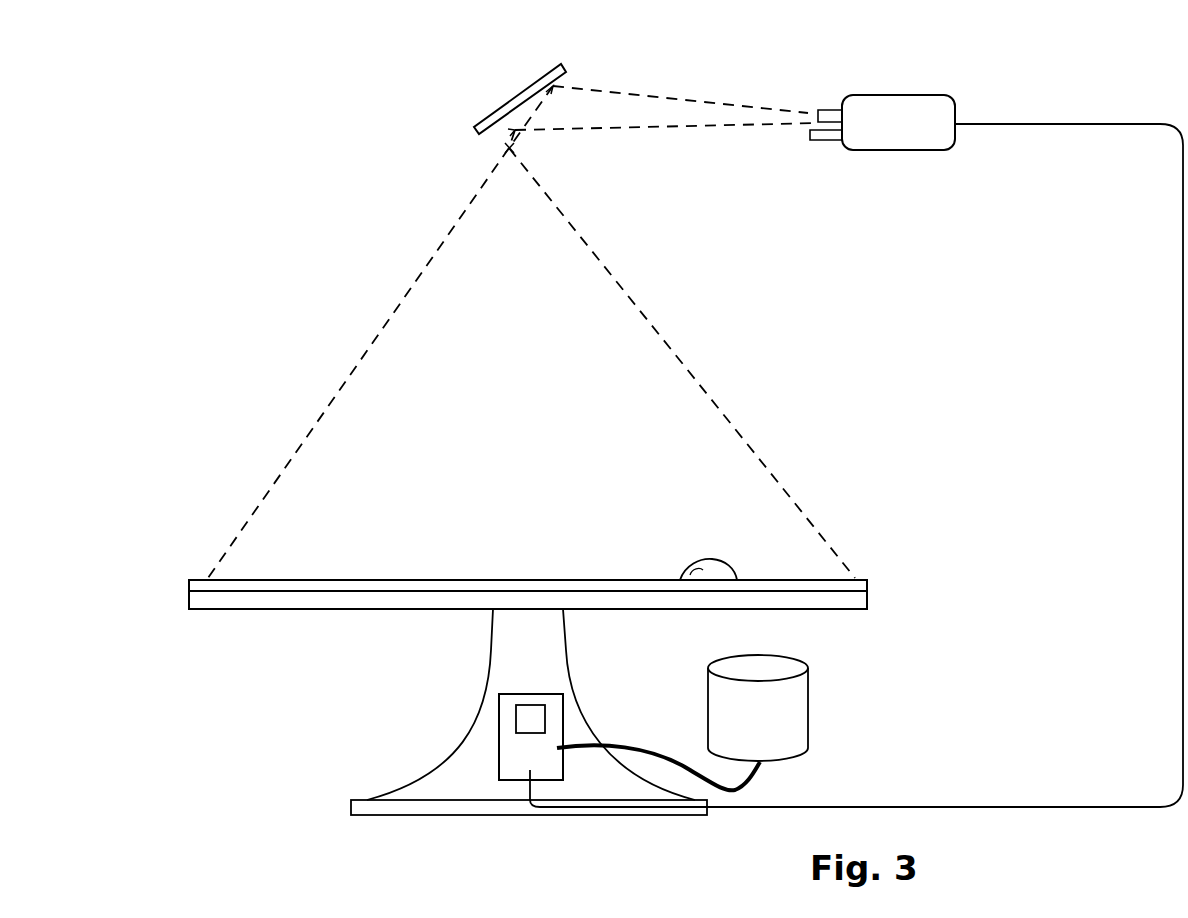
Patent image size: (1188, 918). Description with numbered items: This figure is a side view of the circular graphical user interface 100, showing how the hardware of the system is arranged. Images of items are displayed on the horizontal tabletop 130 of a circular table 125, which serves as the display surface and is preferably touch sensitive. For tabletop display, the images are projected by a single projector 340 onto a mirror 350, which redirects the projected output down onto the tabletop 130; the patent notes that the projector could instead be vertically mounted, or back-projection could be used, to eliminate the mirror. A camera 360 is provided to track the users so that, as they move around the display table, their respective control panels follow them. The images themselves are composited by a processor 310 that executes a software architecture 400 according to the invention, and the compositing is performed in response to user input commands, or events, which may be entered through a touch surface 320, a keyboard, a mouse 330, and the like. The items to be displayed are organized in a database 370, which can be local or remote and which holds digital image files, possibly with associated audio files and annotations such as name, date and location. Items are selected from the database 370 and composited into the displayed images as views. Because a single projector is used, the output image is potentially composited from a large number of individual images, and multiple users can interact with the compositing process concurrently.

The circular graphical user interface 100 is at (946, 716).
The circular table 125 is at (465, 738).
The tabletop 130 is at (294, 574).
The processor 310 is at (512, 782).
The touch surface 320 is at (577, 566).
The mouse 330 is at (730, 562).
The projector 340 is at (893, 95).
The mirror 350 is at (517, 88).
The camera 360 is at (825, 143).
The database 370 is at (808, 708).
The software architecture 400 is at (545, 725).